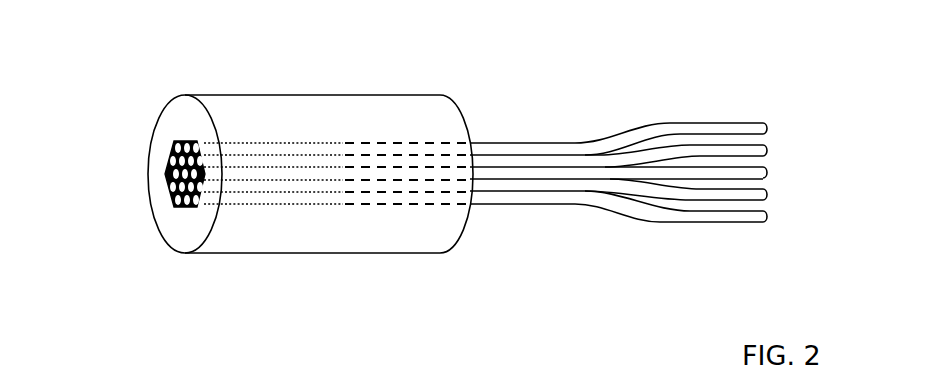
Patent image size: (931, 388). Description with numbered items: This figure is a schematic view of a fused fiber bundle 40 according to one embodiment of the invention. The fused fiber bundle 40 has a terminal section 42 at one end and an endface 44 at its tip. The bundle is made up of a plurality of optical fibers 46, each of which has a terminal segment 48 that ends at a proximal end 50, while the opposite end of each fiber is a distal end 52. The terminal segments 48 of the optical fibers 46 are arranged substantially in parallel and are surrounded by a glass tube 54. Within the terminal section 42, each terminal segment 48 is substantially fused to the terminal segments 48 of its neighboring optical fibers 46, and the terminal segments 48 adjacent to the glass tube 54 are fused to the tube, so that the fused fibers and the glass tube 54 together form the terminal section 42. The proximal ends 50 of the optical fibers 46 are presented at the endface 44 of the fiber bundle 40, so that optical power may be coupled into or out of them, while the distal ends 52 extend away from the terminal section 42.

The fused fiber bundle 40 is at (759, 63).
The terminal section 42 is at (335, 87).
The endface 44 is at (105, 137).
The optical fibers 46 is at (570, 179).
The terminal segment 48 is at (338, 267).
The proximal end 50 is at (177, 203).
The distal end 52 is at (765, 127).
The glass tube 54 is at (420, 235).